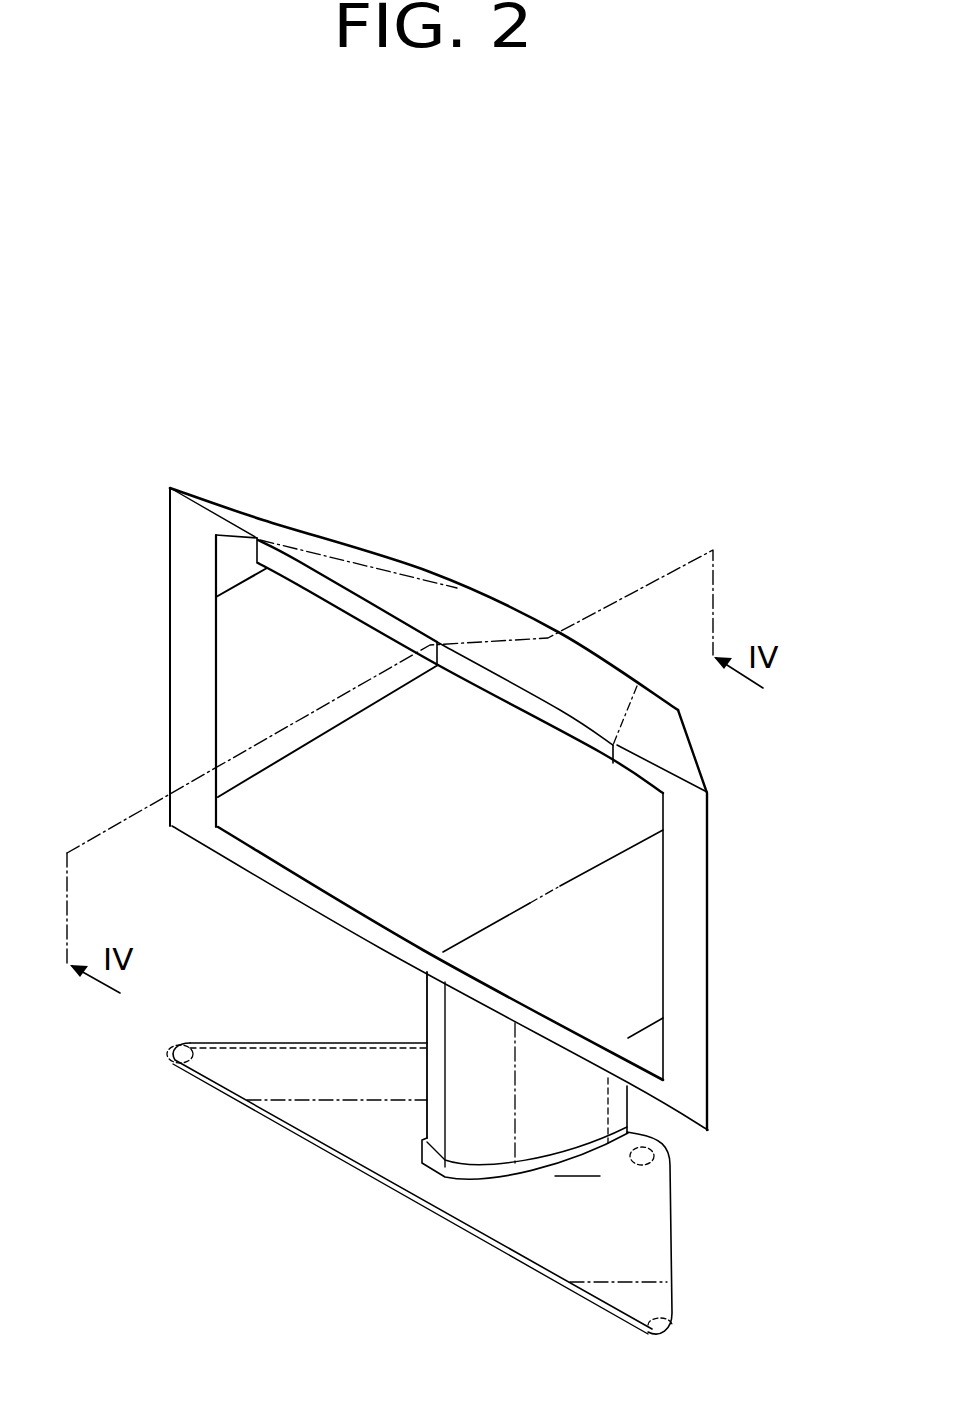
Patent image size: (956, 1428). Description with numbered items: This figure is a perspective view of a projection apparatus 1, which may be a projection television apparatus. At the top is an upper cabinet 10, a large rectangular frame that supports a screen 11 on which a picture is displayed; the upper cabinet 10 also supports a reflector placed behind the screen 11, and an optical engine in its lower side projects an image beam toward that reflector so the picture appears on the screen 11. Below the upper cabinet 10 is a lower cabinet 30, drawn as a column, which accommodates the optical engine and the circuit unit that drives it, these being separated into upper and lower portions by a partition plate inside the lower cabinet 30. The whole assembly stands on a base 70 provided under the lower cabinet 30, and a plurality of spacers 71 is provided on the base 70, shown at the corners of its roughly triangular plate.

The projection apparatus 1 is at (538, 510).
The upper cabinet 10 is at (710, 1013).
The screen 11 is at (633, 933).
The lower cabinet 30 is at (580, 1104).
The base 70 is at (667, 1240).
The spacers 71 is at (677, 1313).